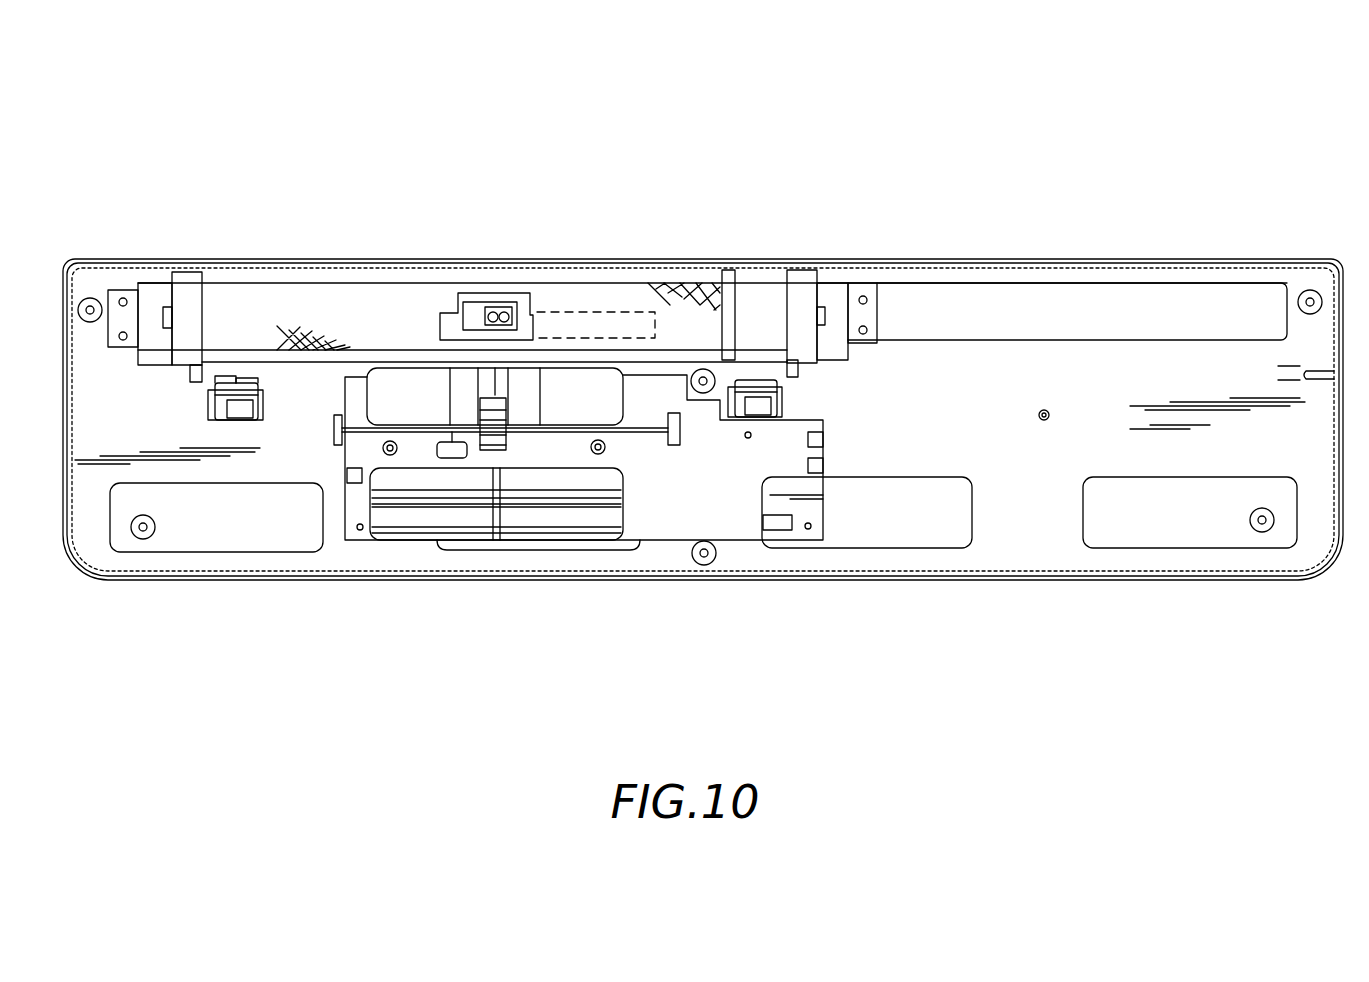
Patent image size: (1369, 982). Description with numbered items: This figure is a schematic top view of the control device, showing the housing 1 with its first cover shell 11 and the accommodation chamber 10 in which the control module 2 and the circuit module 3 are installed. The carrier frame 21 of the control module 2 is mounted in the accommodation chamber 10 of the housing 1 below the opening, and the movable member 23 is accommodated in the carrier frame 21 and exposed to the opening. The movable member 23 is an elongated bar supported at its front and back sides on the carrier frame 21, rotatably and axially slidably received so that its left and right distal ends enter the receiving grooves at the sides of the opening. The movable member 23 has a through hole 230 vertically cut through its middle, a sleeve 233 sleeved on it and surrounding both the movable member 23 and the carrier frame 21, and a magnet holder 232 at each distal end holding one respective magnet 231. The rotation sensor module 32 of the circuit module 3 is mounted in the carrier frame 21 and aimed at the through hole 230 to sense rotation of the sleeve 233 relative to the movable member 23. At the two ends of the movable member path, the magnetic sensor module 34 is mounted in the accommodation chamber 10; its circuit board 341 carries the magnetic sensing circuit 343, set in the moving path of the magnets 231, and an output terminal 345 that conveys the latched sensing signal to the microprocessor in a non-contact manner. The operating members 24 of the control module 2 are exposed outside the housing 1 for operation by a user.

The housing 1 is at (1252, 586).
The accommodation chamber 10 is at (1038, 516).
The first cover shell 11 is at (1160, 578).
The control module 2 is at (921, 160).
The carrier frame 21 is at (868, 310).
The movable member 23 is at (143, 272).
The through hole 230 is at (468, 304).
The magnet 231 is at (790, 296).
The magnet holder 232 is at (177, 272).
The sleeve 233 is at (613, 292).
The circuit module 3 is at (312, 160).
The rotation sensor module 32 is at (503, 304).
The magnetic sensor module 34 is at (194, 404).
The circuit board 341 is at (735, 380).
The magnetic sensing circuit 343 is at (254, 383).
The output terminal 345 is at (221, 383).
The operating members 24 is at (505, 437).